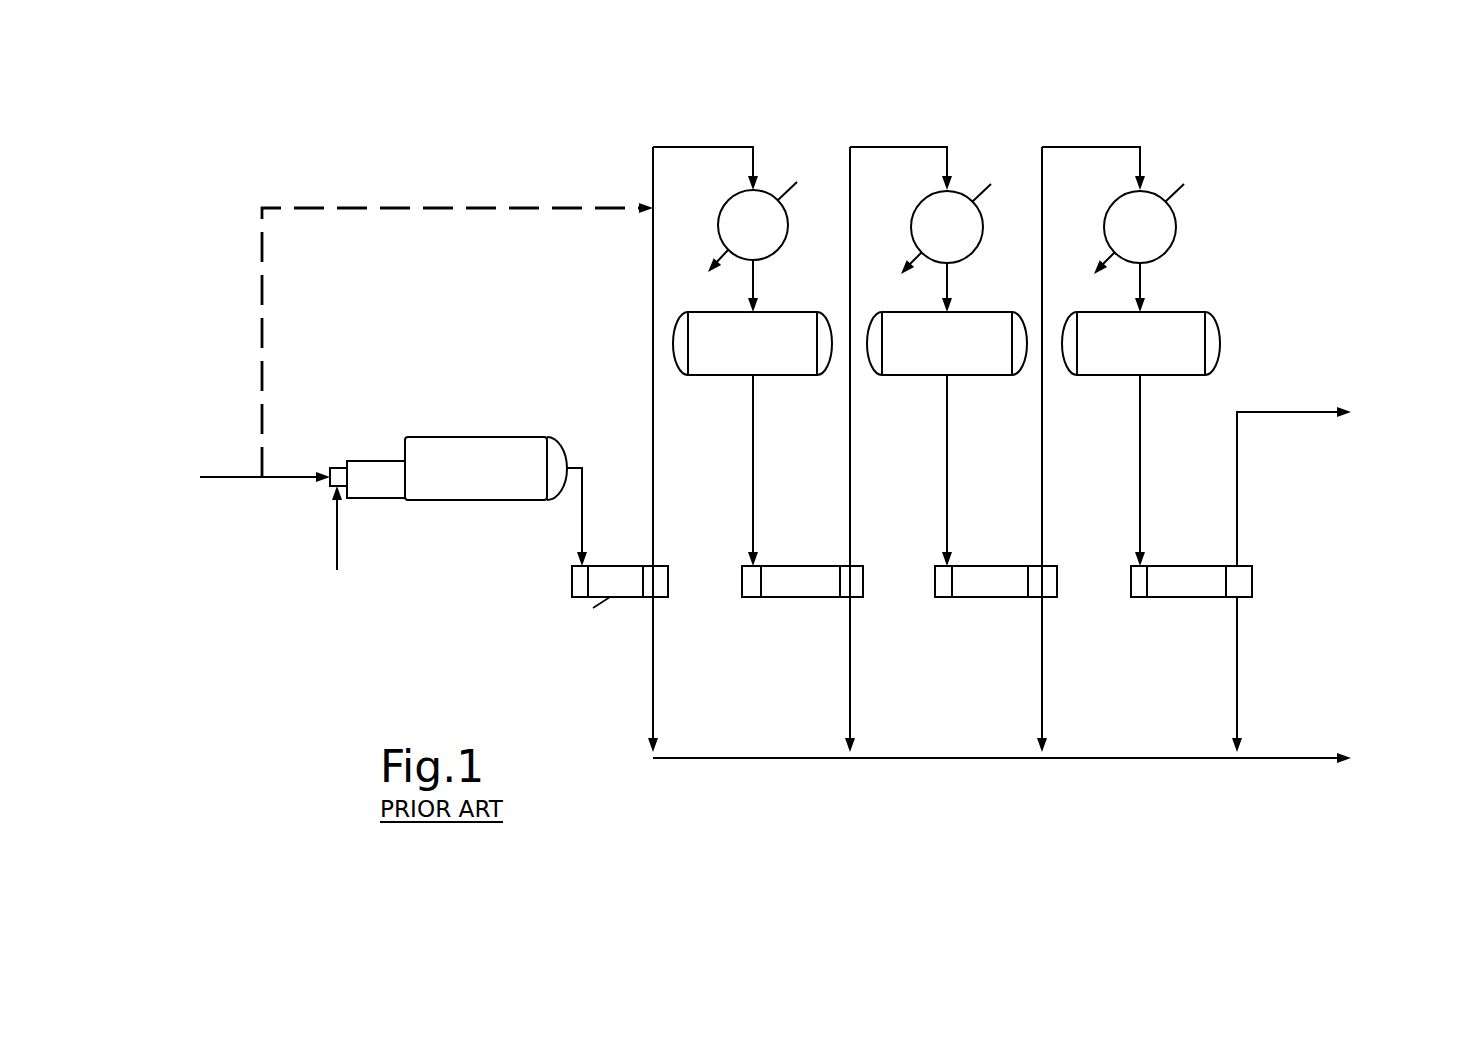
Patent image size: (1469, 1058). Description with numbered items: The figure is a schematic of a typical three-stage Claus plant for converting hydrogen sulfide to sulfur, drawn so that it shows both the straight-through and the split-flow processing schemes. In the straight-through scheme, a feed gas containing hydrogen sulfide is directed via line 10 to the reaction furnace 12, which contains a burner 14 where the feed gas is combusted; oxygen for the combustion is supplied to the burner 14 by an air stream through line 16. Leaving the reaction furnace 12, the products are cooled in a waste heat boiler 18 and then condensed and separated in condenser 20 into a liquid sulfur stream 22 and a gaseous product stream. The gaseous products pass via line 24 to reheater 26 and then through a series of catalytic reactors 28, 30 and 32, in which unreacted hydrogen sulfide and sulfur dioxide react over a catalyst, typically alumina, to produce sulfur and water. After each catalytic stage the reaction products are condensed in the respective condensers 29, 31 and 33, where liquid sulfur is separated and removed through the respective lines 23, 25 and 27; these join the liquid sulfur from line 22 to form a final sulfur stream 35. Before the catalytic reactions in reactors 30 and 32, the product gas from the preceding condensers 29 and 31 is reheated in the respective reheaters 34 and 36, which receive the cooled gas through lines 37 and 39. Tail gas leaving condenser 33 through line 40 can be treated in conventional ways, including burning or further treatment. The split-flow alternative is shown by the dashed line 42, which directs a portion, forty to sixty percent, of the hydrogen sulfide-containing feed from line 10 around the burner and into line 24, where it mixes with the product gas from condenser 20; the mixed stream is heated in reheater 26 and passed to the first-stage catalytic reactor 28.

The line 10 is at (245, 477).
The reaction furnace 12 is at (372, 498).
The burner 14 is at (338, 467).
The line 16 is at (337, 550).
The waste heat boiler 18 is at (522, 437).
The condenser 20 is at (635, 565).
The liquid sulfur stream 22 is at (653, 688).
The line 23 is at (850, 688).
The line 24 is at (723, 147).
The line 25 is at (1042, 692).
The reheater 26 is at (732, 198).
The line 27 is at (1238, 692).
The catalytic reactor 28 is at (803, 294).
The condenser 29 is at (817, 566).
The catalytic reactor 30 is at (978, 314).
The condenser 31 is at (1007, 566).
The catalytic reactor 32 is at (1162, 315).
The condenser 33 is at (1208, 566).
The reheater 34 is at (922, 201).
The final sulfur stream 35 is at (1292, 758).
The reheater 36 is at (1111, 204).
The line 37 is at (912, 147).
The line 39 is at (1100, 147).
The line 40 is at (1299, 412).
The line 42 is at (262, 277).